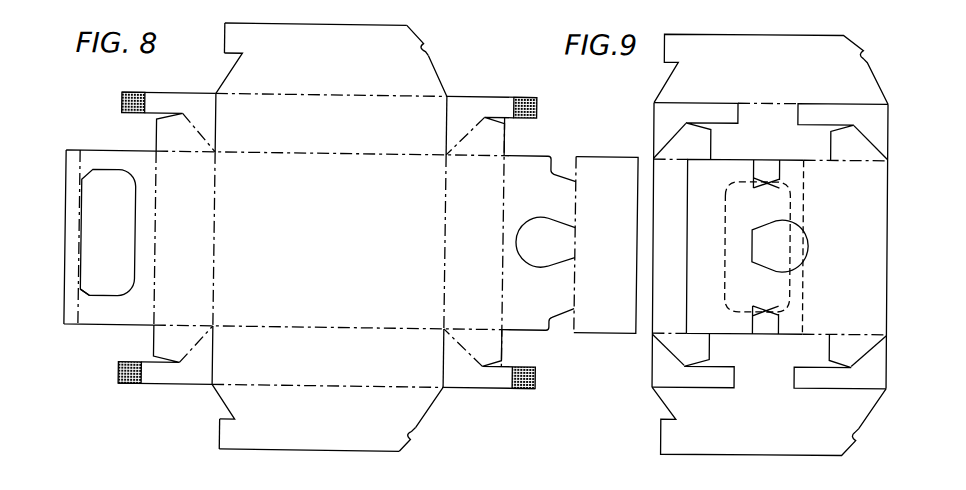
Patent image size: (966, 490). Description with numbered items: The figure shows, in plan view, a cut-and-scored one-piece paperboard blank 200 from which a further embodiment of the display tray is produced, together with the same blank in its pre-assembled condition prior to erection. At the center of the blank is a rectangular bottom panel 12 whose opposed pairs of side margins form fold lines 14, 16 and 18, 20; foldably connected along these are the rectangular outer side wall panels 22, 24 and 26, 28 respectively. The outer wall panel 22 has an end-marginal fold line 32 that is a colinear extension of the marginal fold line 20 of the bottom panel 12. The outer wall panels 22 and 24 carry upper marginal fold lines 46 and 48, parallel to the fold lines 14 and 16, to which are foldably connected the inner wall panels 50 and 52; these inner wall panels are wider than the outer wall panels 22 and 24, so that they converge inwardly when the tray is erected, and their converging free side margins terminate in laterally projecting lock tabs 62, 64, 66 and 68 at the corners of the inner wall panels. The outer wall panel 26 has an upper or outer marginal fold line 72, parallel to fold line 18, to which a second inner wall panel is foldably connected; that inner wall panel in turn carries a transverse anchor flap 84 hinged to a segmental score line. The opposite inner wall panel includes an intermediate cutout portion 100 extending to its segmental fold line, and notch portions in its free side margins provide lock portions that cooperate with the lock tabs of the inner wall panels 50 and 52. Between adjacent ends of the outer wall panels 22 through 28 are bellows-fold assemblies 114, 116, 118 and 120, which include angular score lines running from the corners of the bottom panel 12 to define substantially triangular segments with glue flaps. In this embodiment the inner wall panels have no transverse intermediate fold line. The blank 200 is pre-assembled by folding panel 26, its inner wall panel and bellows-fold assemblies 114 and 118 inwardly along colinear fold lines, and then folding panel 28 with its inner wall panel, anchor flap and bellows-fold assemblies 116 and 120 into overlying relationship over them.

In FIG. 8, the bottom panel 12 is at (339, 254).
In FIG. 8, the side margin fold line 14 is at (283, 155).
In FIG. 8, the side margin fold line 16 is at (267, 325).
In FIG. 9, the side margin fold line 16 is at (763, 337).
In FIG. 8, the side margin fold line 18 is at (216, 205).
In FIG. 8, the side margin fold line 20 is at (444, 210).
In FIG. 8, the outer side wall panel 22 is at (341, 141).
In FIG. 9, the outer side wall panel 22 is at (787, 152).
In FIG. 8, the outer side wall panel 24 is at (350, 367).
In FIG. 9, the outer side wall panel 24 is at (799, 366).
In FIG. 8, the outer side wall panel 26 is at (206, 257).
In FIG. 9, the outer side wall panel 26 is at (684, 262).
In FIG. 8, the outer side wall panel 28 is at (490, 248).
In FIG. 9, the outer side wall panel 28 is at (877, 256).
In FIG. 8, the end-marginal fold line 32 is at (442, 135).
In FIG. 8, the upper marginal fold line 46 is at (290, 97).
In FIG. 8, the upper marginal fold line 48 is at (263, 384).
In FIG. 8, the inner wall panel 50 is at (340, 66).
In FIG. 9, the inner wall panel 50 is at (780, 76).
In FIG. 8, the inner wall panel 52 is at (348, 427).
In FIG. 9, the inner wall panel 52 is at (779, 433).
In FIG. 8, the lock tab 62 is at (222, 41).
In FIG. 8, the lock tab 64 is at (426, 46).
In FIG. 8, the notched edge of cover flap 66 is at (416, 440).
In FIG. 8, the lock tab 68 is at (222, 440).
In FIG. 8, the upper marginal fold line 72 is at (157, 222).
In FIG. 8, the anchor flap 84 is at (78, 329).
In FIG. 8, the cutout portion 100 is at (528, 263).
In FIG. 8, the bellows-fold assembly 114 is at (175, 92).
In FIG. 9, the bellows-fold assembly 114 is at (670, 116).
In FIG. 8, the bellows-fold assembly 116 is at (486, 92).
In FIG. 9, the bellows-fold assembly 116 is at (864, 107).
In FIG. 8, the bellows-fold assembly 118 is at (177, 389).
In FIG. 9, the bellows-fold assembly 118 is at (668, 373).
In FIG. 8, the bellows-fold assembly 120 is at (478, 390).
In FIG. 9, the bellows-fold assembly 120 is at (865, 381).
In FIG. 8, the blank 200 is at (440, 72).
In FIG. 9, the blank 200 is at (880, 44).